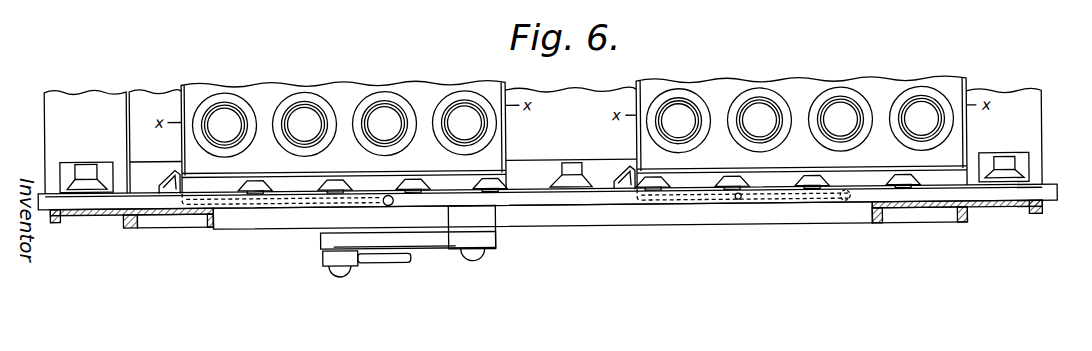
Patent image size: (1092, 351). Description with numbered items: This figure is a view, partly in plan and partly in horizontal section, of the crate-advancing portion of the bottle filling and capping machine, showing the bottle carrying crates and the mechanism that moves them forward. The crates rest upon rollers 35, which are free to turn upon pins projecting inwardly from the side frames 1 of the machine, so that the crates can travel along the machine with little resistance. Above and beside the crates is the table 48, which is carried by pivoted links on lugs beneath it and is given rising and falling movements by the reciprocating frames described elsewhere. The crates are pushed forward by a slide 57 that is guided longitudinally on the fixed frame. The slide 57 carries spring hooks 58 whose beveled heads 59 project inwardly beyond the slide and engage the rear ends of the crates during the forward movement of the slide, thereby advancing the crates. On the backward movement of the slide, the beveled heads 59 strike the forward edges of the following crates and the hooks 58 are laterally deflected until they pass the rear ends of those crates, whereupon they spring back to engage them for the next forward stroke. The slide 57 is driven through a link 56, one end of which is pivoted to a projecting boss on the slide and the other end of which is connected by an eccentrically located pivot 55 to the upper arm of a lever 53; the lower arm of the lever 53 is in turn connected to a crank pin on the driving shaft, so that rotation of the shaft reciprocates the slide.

The side frame 1 is at (170, 218).
The roller 35 is at (82, 166).
The table 48 is at (543, 137).
The lever 53 is at (393, 258).
The eccentrically located pivot 55 is at (338, 270).
The link 56 is at (432, 238).
The slide 57 is at (573, 196).
The spring hook 58 is at (257, 200).
The beveled head 59 is at (159, 176).